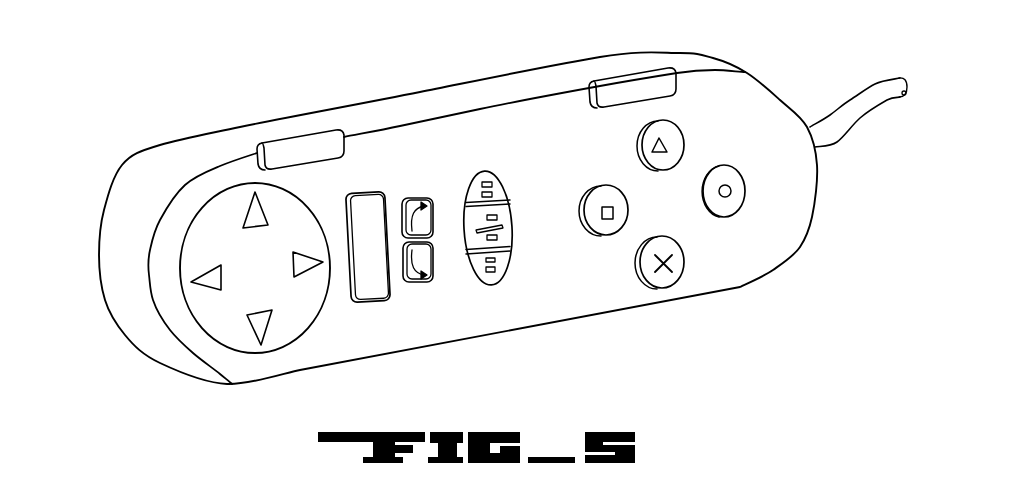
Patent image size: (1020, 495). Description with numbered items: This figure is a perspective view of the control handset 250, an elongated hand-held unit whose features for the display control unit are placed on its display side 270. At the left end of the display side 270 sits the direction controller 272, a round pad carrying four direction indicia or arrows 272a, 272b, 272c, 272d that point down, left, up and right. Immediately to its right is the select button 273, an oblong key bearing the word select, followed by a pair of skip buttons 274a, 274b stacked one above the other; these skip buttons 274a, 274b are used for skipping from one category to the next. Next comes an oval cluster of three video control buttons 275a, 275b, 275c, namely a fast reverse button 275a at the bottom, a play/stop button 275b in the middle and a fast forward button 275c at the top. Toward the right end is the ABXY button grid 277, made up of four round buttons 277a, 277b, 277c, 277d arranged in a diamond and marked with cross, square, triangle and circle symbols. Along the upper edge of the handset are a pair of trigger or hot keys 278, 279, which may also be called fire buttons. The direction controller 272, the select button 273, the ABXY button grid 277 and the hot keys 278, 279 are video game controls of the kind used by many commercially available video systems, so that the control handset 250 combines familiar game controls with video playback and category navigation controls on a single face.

The control handset 250 is at (757, 41).
The display side 270 is at (478, 322).
The direction controller 272 is at (283, 320).
The direction indicium 272a is at (257, 331).
The direction indicium 272b is at (212, 287).
The direction indicium 272c is at (248, 215).
The direction indicium 272d is at (302, 268).
The select button 273 is at (373, 301).
The skip button 274a is at (430, 282).
The skip button 274b is at (428, 199).
The fast reverse button 275a is at (510, 270).
The play/stop button 275b is at (510, 232).
The fast forward button 275c is at (497, 186).
The ABXY button grid 277 is at (724, 236).
The button 277a is at (667, 282).
The button 277b is at (603, 232).
The button 277c is at (637, 146).
The button 277d is at (733, 204).
The trigger or hot key 278 is at (310, 153).
The trigger or hot key 279 is at (660, 92).